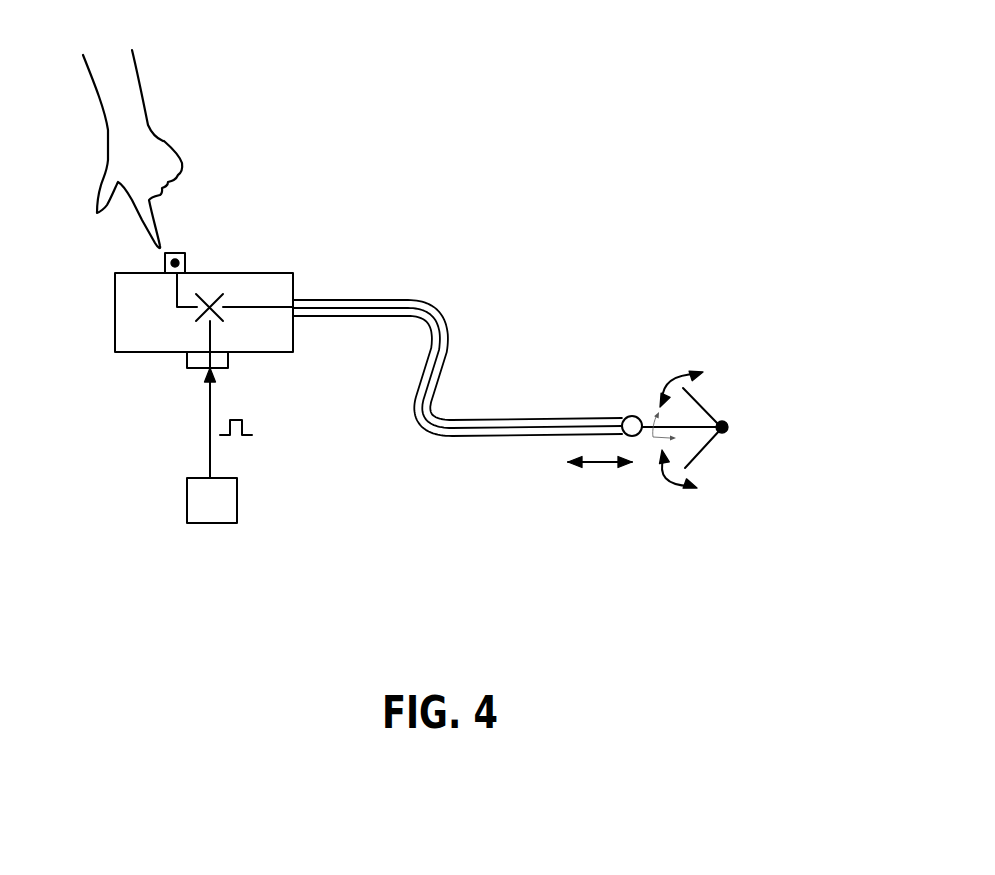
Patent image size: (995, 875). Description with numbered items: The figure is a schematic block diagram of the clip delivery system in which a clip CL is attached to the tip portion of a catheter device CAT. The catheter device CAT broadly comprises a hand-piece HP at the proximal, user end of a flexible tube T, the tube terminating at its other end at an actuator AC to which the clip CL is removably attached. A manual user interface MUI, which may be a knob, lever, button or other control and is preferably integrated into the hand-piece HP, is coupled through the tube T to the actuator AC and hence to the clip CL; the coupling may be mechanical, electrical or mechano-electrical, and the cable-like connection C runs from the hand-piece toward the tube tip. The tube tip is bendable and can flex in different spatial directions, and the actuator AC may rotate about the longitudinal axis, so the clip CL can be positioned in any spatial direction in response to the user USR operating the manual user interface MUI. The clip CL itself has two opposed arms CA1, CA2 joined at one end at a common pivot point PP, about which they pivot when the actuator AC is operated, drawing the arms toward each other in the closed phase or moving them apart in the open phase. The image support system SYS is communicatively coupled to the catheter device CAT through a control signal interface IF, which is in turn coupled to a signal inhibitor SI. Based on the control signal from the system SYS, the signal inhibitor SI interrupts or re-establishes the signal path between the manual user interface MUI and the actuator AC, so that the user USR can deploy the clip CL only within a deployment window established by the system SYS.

The user USR is at (160, 143).
The hand-piece HP is at (100, 319).
The manual user interface MUI is at (180, 252).
The signal inhibitor SI is at (238, 292).
The control signal interface IF is at (233, 360).
The image support system SYS is at (220, 502).
The catheter device CAT is at (468, 202).
The cable C is at (350, 300).
The flexible tube T is at (470, 440).
The actuator AC is at (628, 408).
The pivot point PP is at (735, 425).
The clip CL is at (780, 478).
The first clip arm CA1 is at (717, 390).
The second clip arm CA2 is at (712, 453).